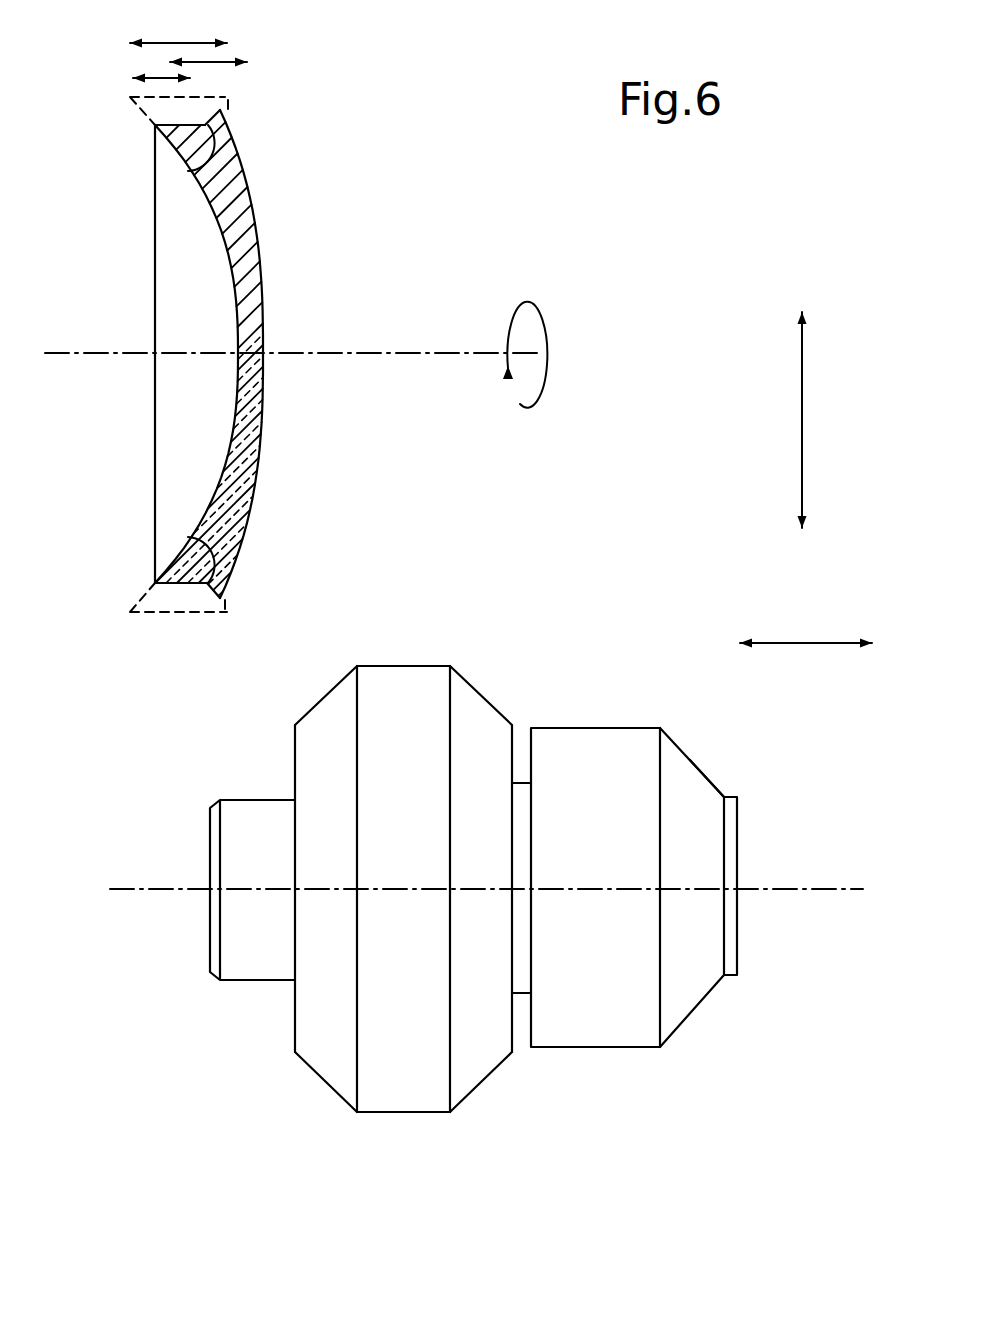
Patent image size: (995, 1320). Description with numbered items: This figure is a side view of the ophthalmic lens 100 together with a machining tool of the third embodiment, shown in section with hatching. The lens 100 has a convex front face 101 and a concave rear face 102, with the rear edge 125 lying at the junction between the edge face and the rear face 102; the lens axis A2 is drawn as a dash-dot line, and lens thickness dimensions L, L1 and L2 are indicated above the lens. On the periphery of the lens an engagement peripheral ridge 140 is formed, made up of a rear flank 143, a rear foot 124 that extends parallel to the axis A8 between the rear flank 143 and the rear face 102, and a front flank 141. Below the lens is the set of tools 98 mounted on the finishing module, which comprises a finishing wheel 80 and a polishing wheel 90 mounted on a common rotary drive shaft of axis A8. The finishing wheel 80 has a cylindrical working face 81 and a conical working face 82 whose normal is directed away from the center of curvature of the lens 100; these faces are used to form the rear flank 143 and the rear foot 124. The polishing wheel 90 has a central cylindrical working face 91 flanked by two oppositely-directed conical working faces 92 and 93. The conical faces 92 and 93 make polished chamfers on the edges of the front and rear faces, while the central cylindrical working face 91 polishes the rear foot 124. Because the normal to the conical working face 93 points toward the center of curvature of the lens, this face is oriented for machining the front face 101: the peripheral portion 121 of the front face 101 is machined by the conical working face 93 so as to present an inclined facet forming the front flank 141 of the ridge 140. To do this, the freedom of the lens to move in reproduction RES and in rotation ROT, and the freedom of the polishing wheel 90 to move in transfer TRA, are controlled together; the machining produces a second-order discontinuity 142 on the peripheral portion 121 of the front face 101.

The ophthalmic lens 100 is at (268, 230).
The convex front face 101 is at (257, 460).
The concave rear face 102 is at (234, 421).
The peripheral portion of the front face 121 is at (237, 98).
The rear foot 124 is at (152, 594).
The rear edge 125 is at (153, 125).
The engagement peripheral ridge 140 is at (193, 172).
The front flank 141 is at (224, 594).
The second-order discontinuity 142 is at (218, 128).
The rear flank 143 is at (202, 591).
The lens thickness L is at (188, 43).
The first length L1 is at (153, 78).
The second length L2 is at (213, 62).
The lens axis A2 is at (418, 352).
The rotation ROT is at (547, 332).
The reproduction RES is at (802, 405).
The transfer TRA is at (792, 643).
The axis of the common rotary drive shaft A8 is at (110, 889).
The polishing wheel 90 is at (428, 652).
The central cylindrical working face 91 is at (392, 1097).
The conical working face 92 is at (477, 1068).
The conical working face 93 is at (323, 1060).
The finishing wheel 80 is at (592, 715).
The cylindrical working face 81 is at (572, 1035).
The conical working face 82 is at (692, 992).
The set of tools 98 is at (727, 760).